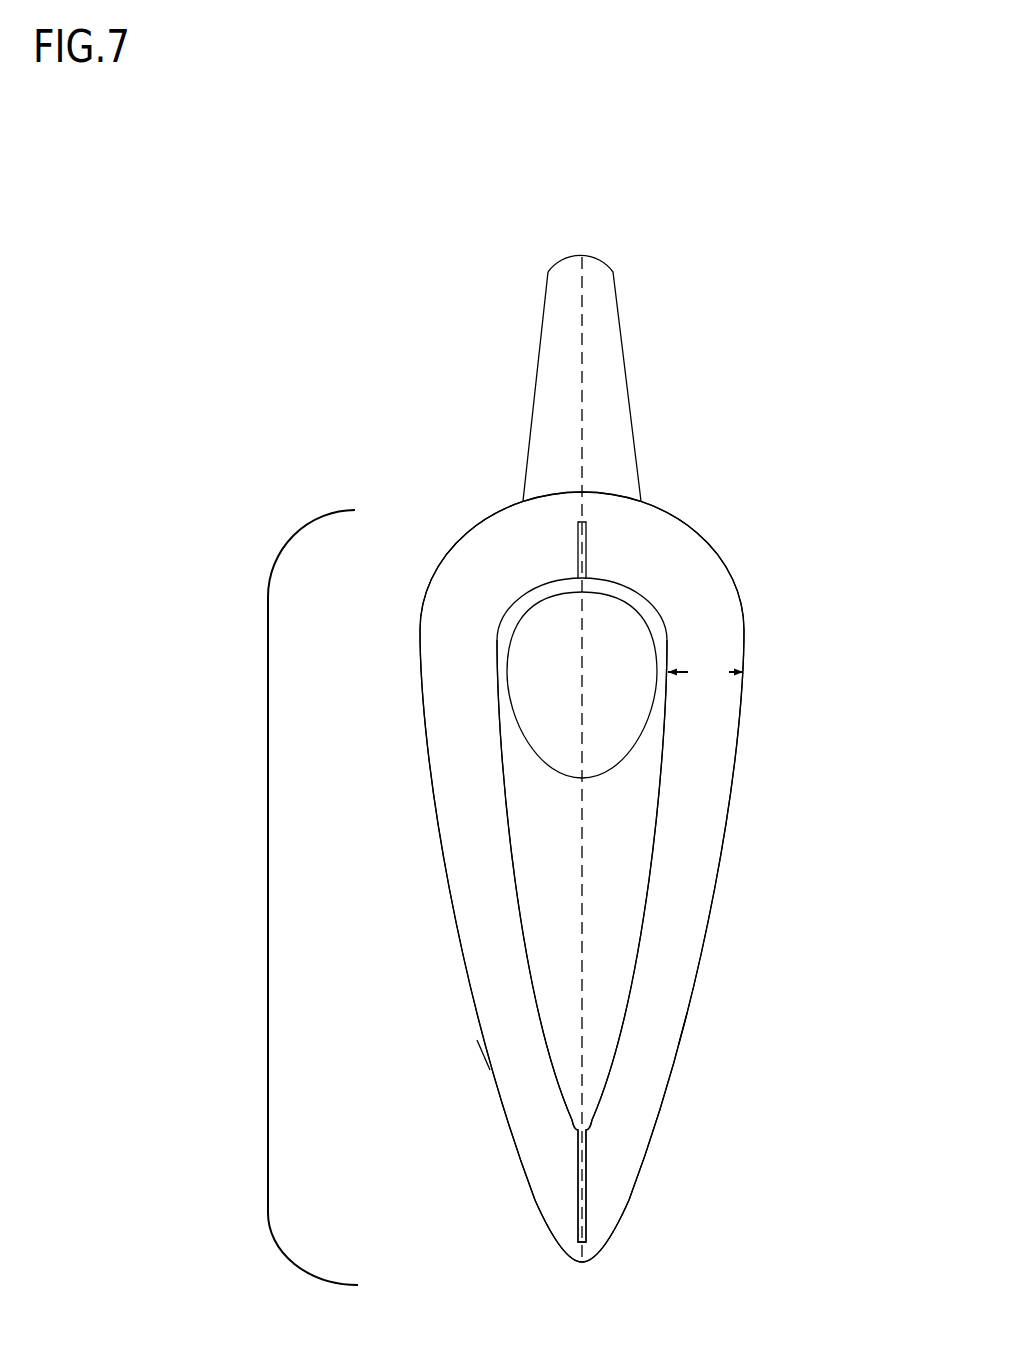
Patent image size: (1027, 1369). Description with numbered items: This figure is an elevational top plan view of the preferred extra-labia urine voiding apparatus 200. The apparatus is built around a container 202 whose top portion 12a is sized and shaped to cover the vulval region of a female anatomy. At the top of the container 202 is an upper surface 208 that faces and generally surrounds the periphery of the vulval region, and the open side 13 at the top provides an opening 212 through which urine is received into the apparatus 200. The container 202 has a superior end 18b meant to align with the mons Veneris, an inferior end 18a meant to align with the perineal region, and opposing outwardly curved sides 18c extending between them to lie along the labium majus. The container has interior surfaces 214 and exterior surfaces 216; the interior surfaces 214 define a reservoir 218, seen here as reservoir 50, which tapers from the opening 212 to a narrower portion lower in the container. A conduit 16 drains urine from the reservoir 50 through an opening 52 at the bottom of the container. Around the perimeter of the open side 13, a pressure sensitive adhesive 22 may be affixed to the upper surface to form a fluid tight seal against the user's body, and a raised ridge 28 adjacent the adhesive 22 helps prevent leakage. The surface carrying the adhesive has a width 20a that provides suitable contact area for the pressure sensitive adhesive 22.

The extra-labia urine voiding apparatus 200 is at (705, 340).
The conduit 16 is at (535, 372).
The exterior surfaces 216 is at (527, 458).
The container 202 is at (677, 517).
The superior end 18b is at (447, 557).
The raised ridge 28 is at (722, 562).
The opposing outwardly curved sides 18c is at (738, 752).
The pressure sensitive adhesive 22 is at (687, 1033).
The upper surface 208 is at (488, 1068).
The top portion 12a is at (625, 1202).
The inferior end 18a is at (535, 1197).
The reservoir 50 is at (627, 838).
The interior surfaces 214 is at (563, 877).
The reservoir 218 is at (647, 907).
The opening 212 is at (608, 1073).
The opening 52 is at (582, 685).
The width 20a is at (705, 672).
The open side 13 is at (268, 889).